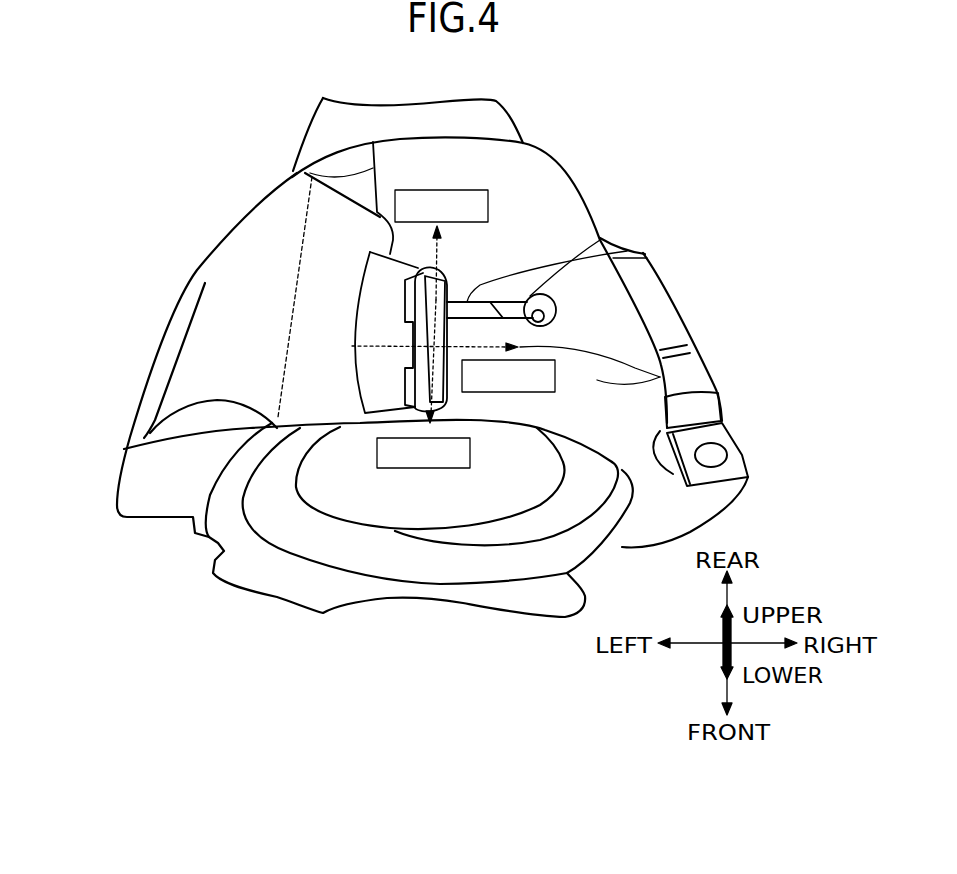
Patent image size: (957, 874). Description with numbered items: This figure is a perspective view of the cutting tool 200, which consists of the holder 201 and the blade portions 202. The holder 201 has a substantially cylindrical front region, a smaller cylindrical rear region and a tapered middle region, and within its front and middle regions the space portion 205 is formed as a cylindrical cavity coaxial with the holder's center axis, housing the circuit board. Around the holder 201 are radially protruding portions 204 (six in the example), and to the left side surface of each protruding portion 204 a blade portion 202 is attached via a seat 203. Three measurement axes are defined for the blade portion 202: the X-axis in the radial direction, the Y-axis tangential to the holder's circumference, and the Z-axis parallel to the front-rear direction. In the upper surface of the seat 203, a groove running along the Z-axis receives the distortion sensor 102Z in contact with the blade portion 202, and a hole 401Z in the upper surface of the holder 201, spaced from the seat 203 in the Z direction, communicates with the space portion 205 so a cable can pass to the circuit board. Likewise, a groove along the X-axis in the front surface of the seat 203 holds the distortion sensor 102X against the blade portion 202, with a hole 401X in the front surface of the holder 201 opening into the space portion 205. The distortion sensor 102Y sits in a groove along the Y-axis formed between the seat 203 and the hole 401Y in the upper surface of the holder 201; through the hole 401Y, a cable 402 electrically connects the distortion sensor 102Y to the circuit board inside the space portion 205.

The cutting tool 200 is at (477, 131).
The holder 201 is at (533, 180).
The blade portion 202 is at (368, 313).
The seat 203 is at (450, 275).
The protruding portion 204 is at (693, 363).
The space portion 205 is at (393, 497).
The cable 402 is at (648, 254).
The distortion sensor 102X is at (413, 373).
The distortion sensor 102Y is at (600, 240).
The distortion sensor 102Z is at (415, 302).
The hole 401X is at (437, 422).
The hole 401Y is at (553, 303).
The hole 401Z is at (310, 170).